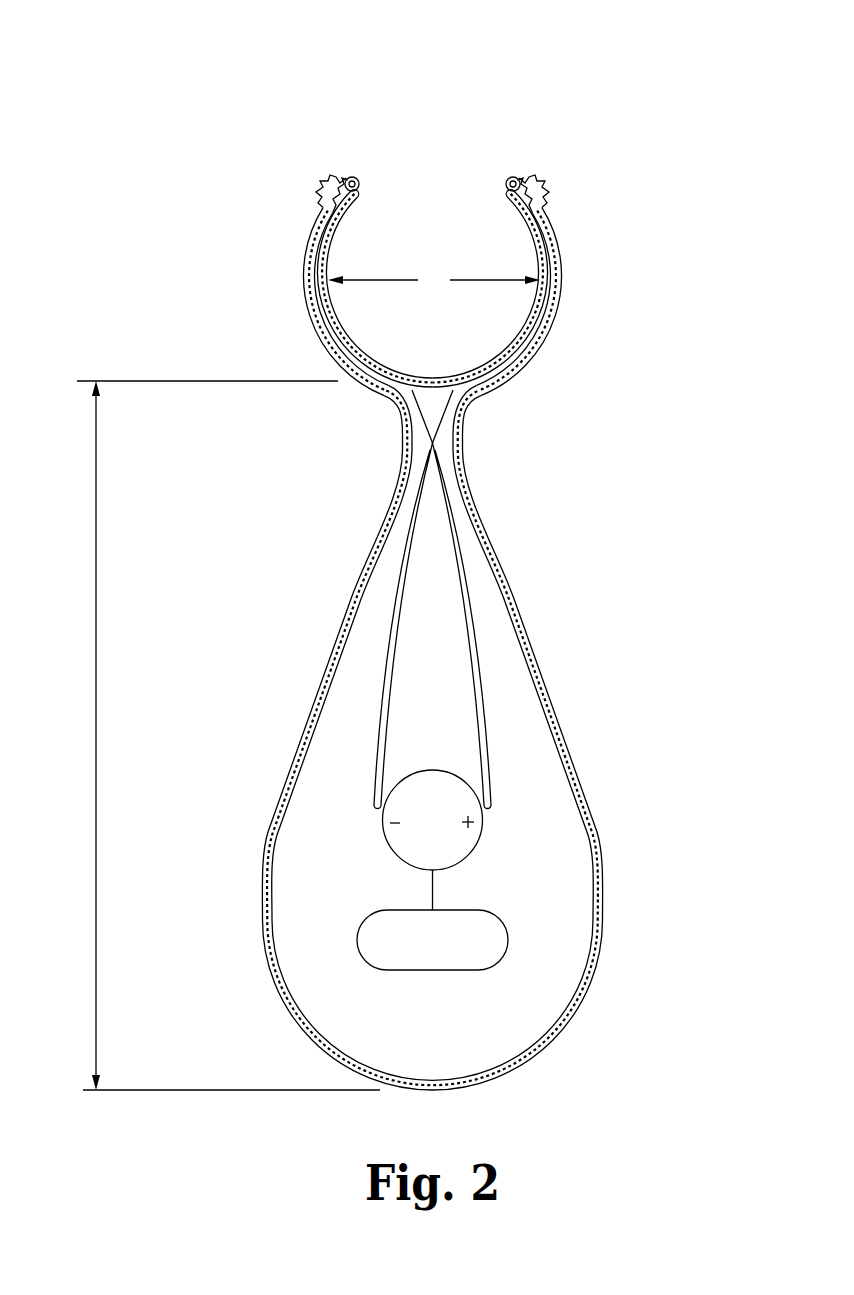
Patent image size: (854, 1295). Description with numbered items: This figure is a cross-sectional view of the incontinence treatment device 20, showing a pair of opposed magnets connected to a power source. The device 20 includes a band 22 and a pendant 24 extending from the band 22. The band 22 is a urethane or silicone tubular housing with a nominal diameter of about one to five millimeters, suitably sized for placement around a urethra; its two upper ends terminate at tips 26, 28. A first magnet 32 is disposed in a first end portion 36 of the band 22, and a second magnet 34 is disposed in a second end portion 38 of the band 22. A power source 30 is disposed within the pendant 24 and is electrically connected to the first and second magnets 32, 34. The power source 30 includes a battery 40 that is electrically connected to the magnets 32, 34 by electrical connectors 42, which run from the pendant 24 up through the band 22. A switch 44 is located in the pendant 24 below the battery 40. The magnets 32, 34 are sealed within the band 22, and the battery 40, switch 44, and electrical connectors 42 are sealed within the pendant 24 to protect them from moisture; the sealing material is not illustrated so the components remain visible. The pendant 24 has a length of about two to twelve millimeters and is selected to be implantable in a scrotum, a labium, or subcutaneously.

The incontinence treatment device 20 is at (250, 86).
The band 22 is at (563, 236).
The pendant 24 is at (582, 792).
The first tip 26 is at (354, 182).
The second tip 28 is at (505, 180).
The power source 30 is at (368, 834).
The first magnet 32 is at (347, 210).
The second magnet 34 is at (512, 212).
The first end portion 36 is at (320, 187).
The second end portion 38 is at (545, 186).
The battery 40 is at (458, 843).
The electrical connectors 42 is at (393, 652).
The switch 44 is at (490, 935).